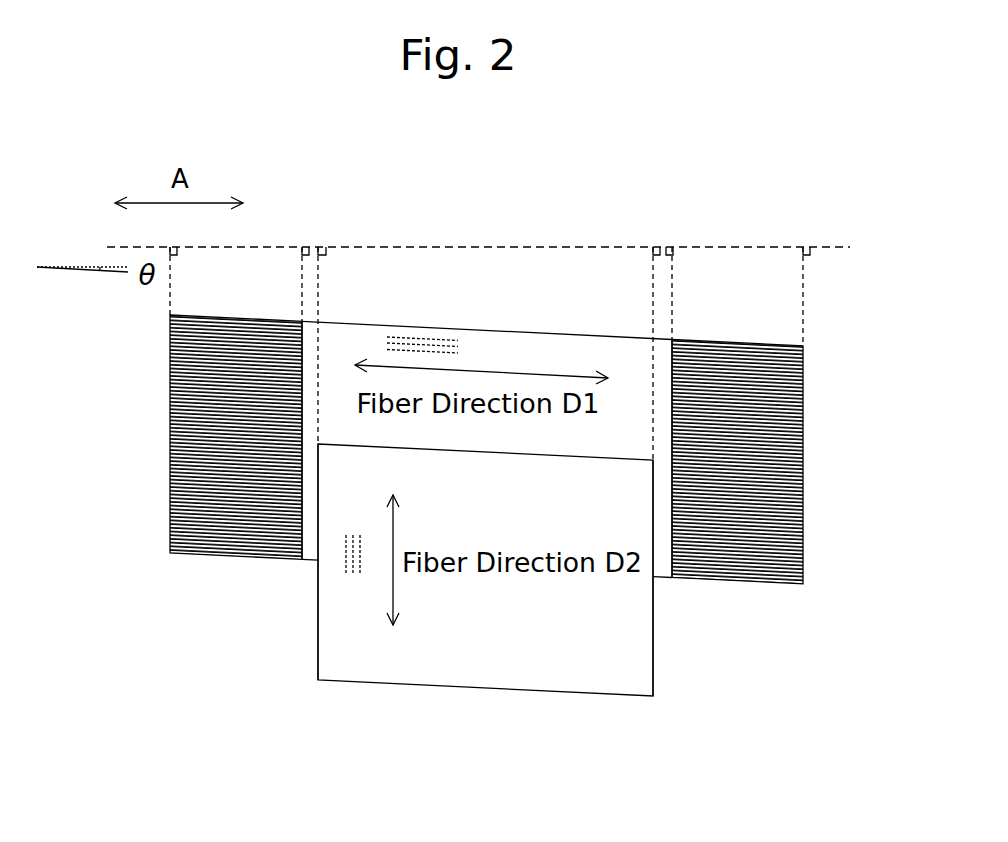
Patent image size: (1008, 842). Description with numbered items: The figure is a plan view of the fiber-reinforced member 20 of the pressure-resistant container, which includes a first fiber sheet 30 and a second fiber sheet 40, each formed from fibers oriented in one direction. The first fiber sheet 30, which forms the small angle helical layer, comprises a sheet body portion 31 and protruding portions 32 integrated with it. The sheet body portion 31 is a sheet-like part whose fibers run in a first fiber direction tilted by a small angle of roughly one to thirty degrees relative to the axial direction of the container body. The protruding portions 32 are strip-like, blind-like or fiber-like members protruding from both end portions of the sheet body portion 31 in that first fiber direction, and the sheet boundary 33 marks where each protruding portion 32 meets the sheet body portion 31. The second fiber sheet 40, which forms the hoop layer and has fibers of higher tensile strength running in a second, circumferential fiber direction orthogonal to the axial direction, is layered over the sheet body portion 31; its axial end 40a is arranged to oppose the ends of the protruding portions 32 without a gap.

The fiber-reinforced member 20 is at (684, 674).
The first fiber sheet 30 is at (383, 180).
The sheet body portion 31 is at (511, 350).
The protruding portions 32 is at (243, 340).
The sheet boundary 33 is at (302, 562).
The second fiber sheet 40 is at (484, 670).
The end of the second fiber sheet 40a is at (318, 647).